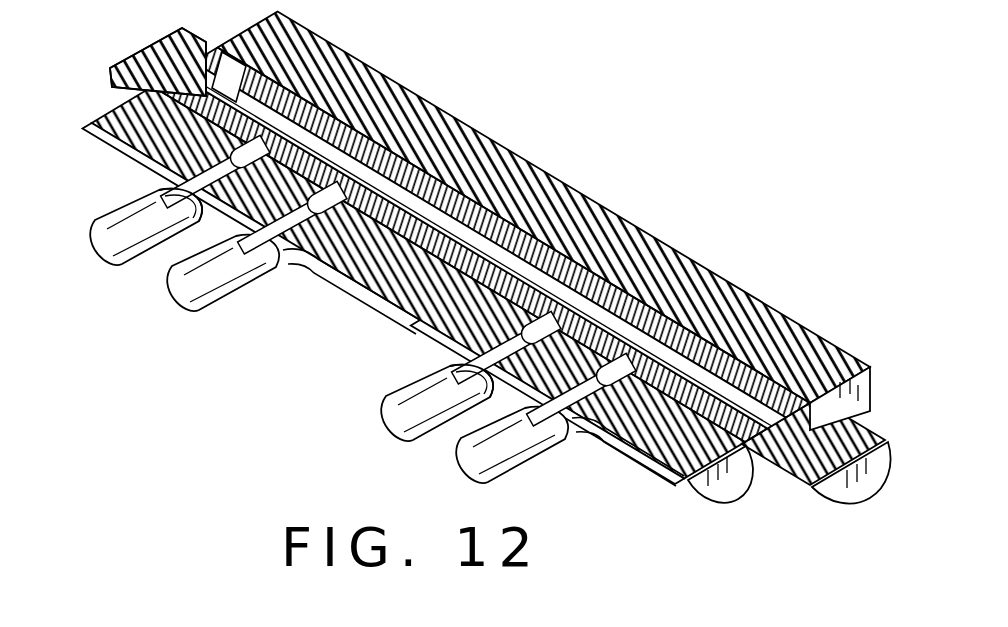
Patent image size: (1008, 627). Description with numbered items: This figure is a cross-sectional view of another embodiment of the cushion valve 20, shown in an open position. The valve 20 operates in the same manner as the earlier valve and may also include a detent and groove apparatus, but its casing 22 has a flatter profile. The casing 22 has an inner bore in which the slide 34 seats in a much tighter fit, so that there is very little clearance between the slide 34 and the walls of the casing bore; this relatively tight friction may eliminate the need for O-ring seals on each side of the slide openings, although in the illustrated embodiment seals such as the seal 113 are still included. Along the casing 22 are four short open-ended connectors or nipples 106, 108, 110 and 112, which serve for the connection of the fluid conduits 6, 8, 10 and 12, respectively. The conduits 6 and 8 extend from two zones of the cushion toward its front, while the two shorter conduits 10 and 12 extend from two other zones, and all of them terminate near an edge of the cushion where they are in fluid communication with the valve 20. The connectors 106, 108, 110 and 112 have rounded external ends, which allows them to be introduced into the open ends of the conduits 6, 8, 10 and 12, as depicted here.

The valve 20 is at (598, 185).
The casing 22 is at (685, 278).
The slide 34 is at (443, 182).
The seal 113 is at (238, 110).
The fluid conduit 6 is at (110, 217).
The fluid conduit 8 is at (180, 308).
The conduit 10 is at (410, 395).
The conduit 12 is at (472, 452).
The connector 106 is at (200, 228).
The connector 108 is at (296, 264).
The connector 110 is at (455, 416).
The connector 112 is at (590, 434).